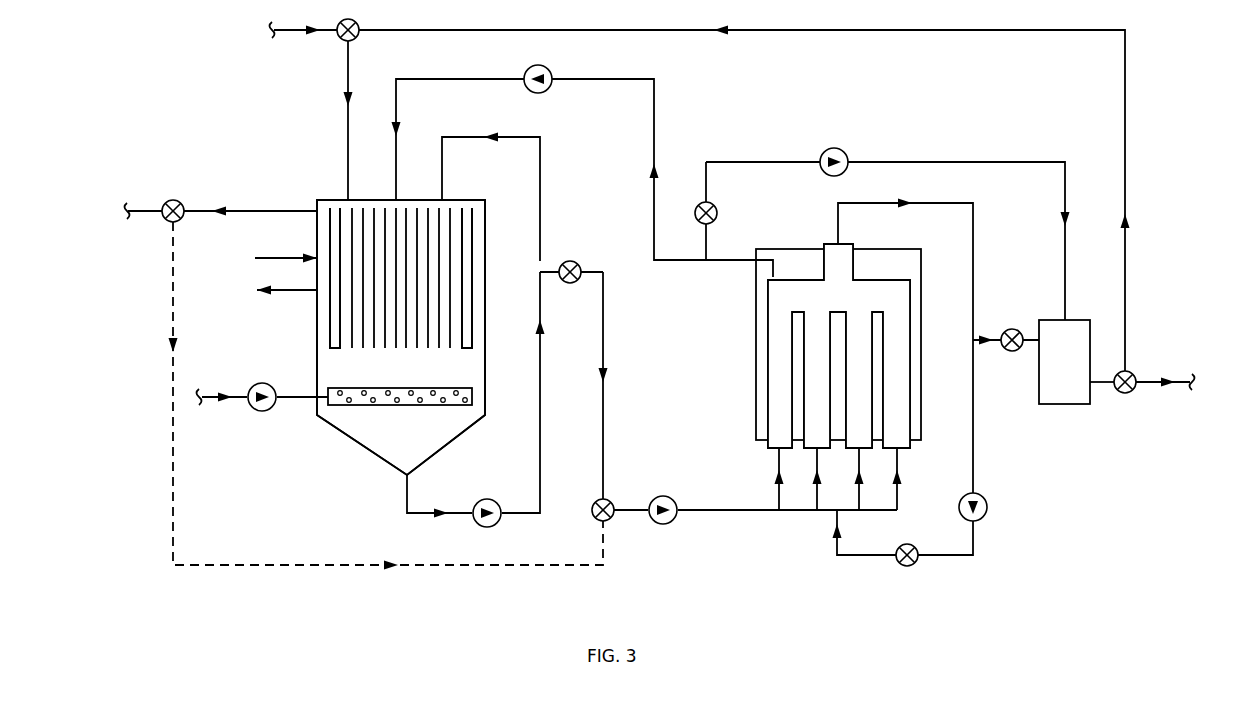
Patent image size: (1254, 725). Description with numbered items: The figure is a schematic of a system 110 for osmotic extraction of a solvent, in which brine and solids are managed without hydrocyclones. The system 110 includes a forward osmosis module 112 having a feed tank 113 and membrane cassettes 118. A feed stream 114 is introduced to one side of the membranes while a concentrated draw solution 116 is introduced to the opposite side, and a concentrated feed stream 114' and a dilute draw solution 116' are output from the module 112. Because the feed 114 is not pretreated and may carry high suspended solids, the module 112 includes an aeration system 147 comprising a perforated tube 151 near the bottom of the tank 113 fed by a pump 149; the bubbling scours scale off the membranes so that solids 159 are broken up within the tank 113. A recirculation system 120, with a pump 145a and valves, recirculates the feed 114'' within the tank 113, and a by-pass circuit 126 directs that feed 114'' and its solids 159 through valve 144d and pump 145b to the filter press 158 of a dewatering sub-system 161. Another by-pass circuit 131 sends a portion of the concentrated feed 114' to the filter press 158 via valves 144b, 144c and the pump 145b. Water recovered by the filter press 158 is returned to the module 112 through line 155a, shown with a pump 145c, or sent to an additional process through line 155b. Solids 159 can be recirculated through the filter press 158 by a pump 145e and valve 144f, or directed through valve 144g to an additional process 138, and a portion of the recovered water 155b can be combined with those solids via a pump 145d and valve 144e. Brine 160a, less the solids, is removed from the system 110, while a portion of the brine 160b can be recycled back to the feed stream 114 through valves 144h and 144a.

The system 110 is at (965, 596).
The forward osmosis module 112 is at (313, 170).
The feed tank 113 is at (317, 360).
The feed stream 114 is at (283, 31).
The concentrated feed stream 114' is at (133, 200).
The recirculated feed 114'' is at (516, 197).
The concentrated draw solution 116 is at (268, 259).
The dilute draw solution 116' is at (267, 292).
The membrane cassette 118 is at (447, 307).
The recirculation system 120 is at (541, 394).
The by-pass circuit 126 is at (604, 314).
The by-pass circuit 131 is at (173, 478).
The additional process 138 is at (1062, 404).
The valve 144a is at (373, 23).
The valve 144b is at (173, 200).
The valve 144c is at (595, 519).
The valve 144d is at (572, 261).
The valve 144e is at (712, 203).
The valve 144f is at (900, 565).
The valve 144g is at (1006, 325).
The valve 144h is at (1133, 372).
The pump 145a is at (459, 501).
The pump 145b is at (667, 526).
The pump 145c is at (547, 67).
The pump 145d is at (800, 156).
The pump 145e is at (935, 524).
The aeration system 147 is at (215, 409).
The pump 149 is at (287, 385).
The perforated tube 151 is at (345, 405).
The line 155a is at (654, 100).
The line 155b is at (985, 161).
The filter press 158 is at (756, 300).
The solids 159 is at (974, 398).
The brine 160a is at (1177, 395).
The brine 160b is at (768, 199).
The dewatering sub-system 161 is at (915, 91).